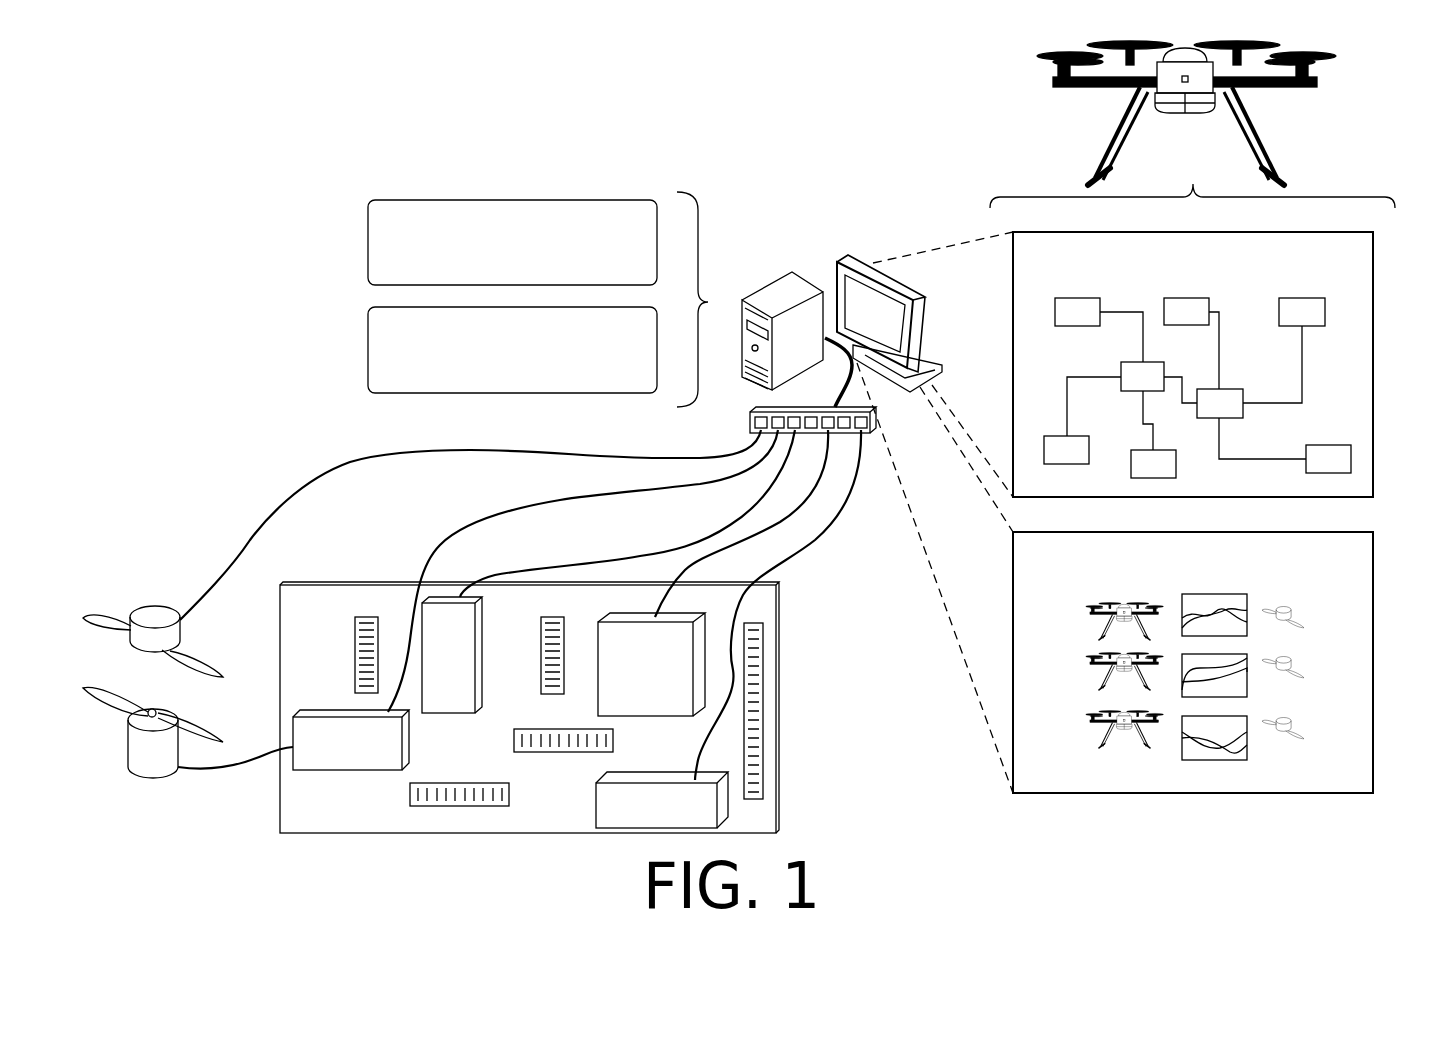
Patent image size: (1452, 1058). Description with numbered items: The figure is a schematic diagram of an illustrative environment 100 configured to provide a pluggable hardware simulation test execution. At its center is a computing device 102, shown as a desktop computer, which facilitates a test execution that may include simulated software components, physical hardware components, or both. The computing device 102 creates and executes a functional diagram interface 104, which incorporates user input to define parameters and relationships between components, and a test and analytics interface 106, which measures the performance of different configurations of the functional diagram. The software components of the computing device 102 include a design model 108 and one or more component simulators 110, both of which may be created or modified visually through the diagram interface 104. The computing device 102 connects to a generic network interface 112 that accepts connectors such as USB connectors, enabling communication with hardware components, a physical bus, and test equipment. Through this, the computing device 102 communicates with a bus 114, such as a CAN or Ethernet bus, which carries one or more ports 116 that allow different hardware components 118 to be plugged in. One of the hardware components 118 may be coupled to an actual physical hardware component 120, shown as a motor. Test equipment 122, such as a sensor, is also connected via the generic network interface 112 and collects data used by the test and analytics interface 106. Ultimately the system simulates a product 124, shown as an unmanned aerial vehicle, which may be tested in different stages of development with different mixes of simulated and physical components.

The environment 100 is at (214, 144).
The computing device 102 is at (792, 272).
The diagram interface 104 is at (1373, 275).
The test and analytics interface 106 is at (1373, 565).
The design model 108 is at (512, 242).
The component simulator(s) 110 is at (512, 350).
The generic network interface 112 is at (870, 435).
The bus 114 is at (380, 582).
The ports 116 is at (433, 805).
The hardware components 118 is at (608, 815).
The physical hardware component 120 is at (153, 783).
The test equipment 122 is at (155, 605).
The product 124 is at (1098, 87).